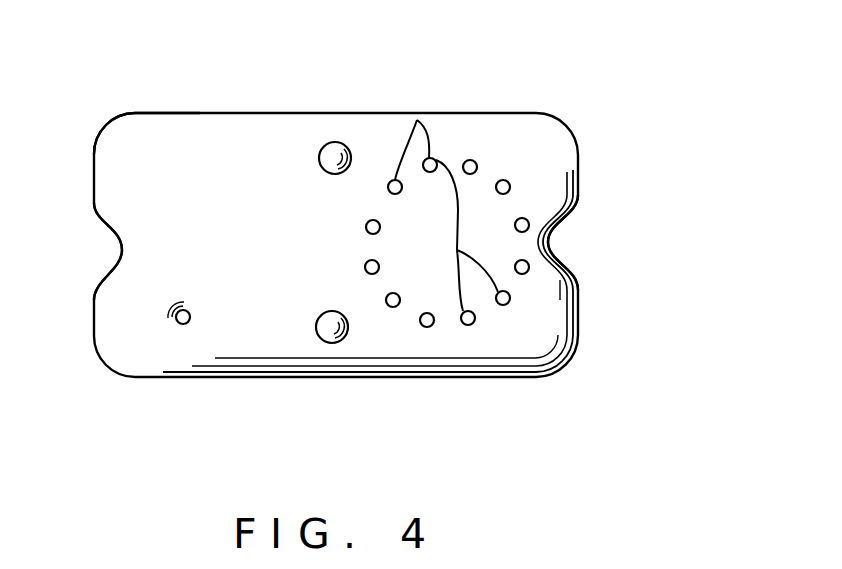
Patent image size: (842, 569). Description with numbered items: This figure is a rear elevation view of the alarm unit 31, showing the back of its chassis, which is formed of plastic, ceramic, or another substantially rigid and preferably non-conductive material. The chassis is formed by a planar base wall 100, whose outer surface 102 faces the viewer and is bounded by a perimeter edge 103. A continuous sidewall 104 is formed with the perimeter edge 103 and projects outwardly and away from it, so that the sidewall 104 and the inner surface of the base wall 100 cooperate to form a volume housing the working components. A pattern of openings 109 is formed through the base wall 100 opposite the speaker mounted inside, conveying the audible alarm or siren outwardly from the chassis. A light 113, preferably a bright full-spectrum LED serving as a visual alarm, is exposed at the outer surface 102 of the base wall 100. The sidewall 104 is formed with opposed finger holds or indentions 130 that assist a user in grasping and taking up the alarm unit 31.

The base wall 100 is at (547, 133).
The outer surface 102 is at (262, 160).
The perimeter edge 103 is at (138, 113).
The continuous sidewall 104 is at (578, 313).
The pattern of openings 109 is at (417, 120).
The light 113 is at (189, 322).
The finger holds or indentions 130 is at (121, 248).
The alarm unit 31 is at (505, 98).